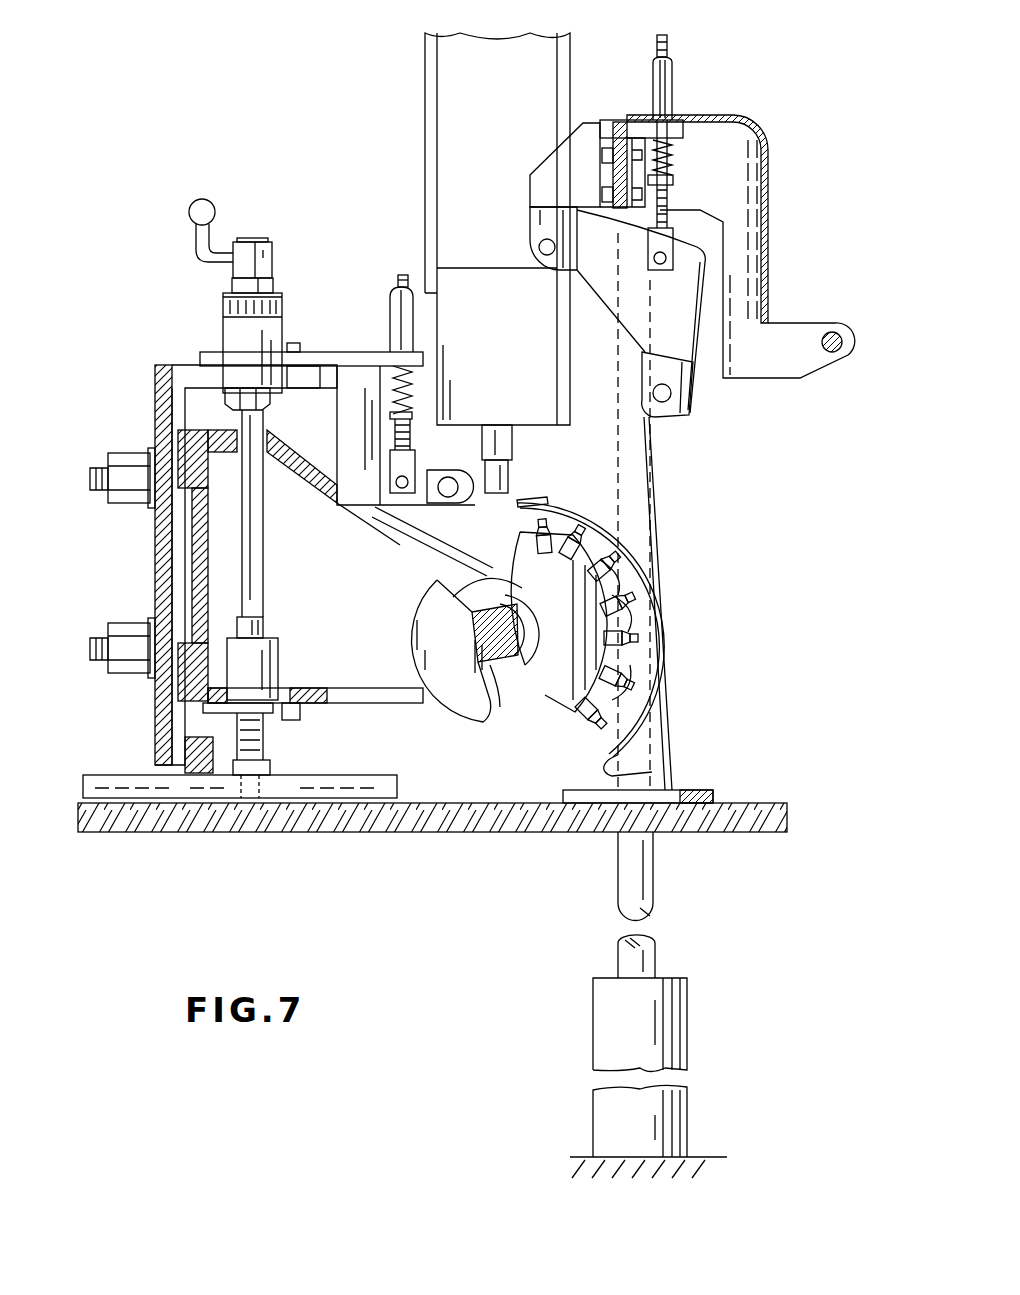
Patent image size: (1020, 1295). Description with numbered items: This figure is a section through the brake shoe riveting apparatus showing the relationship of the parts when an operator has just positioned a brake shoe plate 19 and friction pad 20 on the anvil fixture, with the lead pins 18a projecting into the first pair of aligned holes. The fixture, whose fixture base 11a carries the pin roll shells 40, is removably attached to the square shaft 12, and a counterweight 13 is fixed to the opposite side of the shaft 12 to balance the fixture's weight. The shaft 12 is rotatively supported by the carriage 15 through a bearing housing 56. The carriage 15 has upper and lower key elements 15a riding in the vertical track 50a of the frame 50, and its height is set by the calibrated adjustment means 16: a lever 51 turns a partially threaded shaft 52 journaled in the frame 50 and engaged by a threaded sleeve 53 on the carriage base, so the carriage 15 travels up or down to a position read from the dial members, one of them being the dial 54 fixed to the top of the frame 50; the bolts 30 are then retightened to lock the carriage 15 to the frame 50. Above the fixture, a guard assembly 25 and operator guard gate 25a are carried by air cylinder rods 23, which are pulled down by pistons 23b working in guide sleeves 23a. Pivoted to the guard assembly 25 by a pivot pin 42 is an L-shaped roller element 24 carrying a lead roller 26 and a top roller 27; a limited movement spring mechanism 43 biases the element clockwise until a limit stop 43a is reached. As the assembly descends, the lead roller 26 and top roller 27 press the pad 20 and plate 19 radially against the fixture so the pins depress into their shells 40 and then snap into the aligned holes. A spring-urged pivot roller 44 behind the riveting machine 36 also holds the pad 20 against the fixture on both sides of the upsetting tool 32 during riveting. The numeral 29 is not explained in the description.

The fixture base 11a is at (563, 690).
The shaft 12 is at (497, 700).
The counterweight 13 is at (432, 630).
The carriage 15 is at (383, 705).
The key elements 15a is at (185, 448).
The adjustment means 16 is at (300, 248).
The lead pins 18a is at (540, 500).
The brake shoe plate 19 is at (615, 770).
The friction pad 20 is at (660, 625).
The air cylinder rods 23 is at (625, 890).
The guide sleeves 23a is at (668, 715).
The pistons 23b is at (606, 1010).
The roller element 24 is at (692, 340).
The guard assembly 25 is at (618, 120).
The operator guard gate 25a is at (770, 220).
The lead roller 26 is at (665, 418).
The top roller 27 is at (540, 238).
The distributor 29 is at (600, 550).
The bolts 30 is at (118, 455).
The upsetting tool 32 is at (505, 445).
The riveting machine 36 is at (430, 120).
The pin roll shells 40 is at (640, 600).
The pivot pin 42 is at (545, 252).
The spring mechanism 43 is at (667, 195).
The limit stop 43a is at (665, 182).
The pivot roller 44 is at (420, 538).
The frame 50 is at (168, 535).
The vertical track 50a is at (178, 582).
The lever 51 is at (200, 210).
The threaded shaft 52 is at (265, 628).
The threaded sleeve 53 is at (272, 655).
The calibrated dial member 54 is at (222, 308).
The bearing housing 56 is at (425, 570).